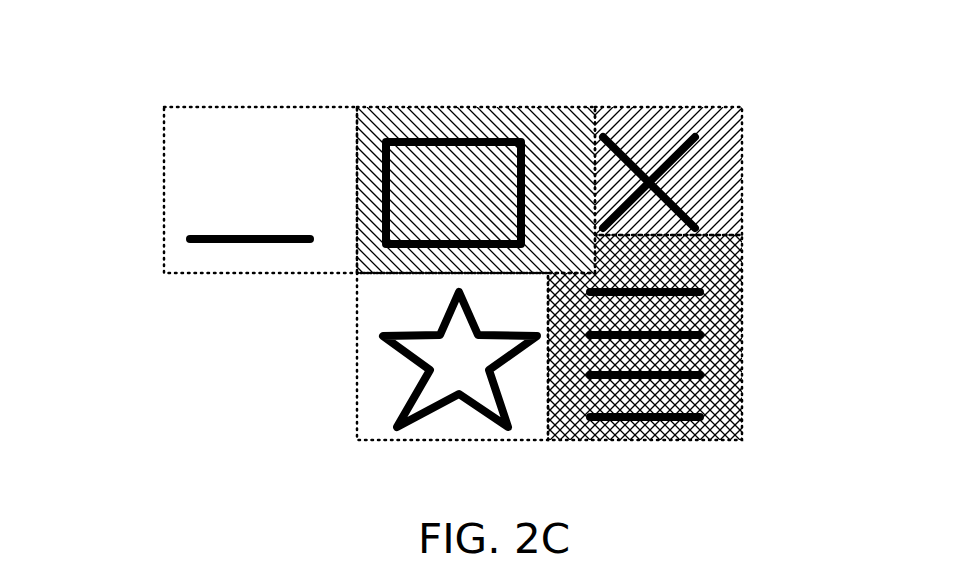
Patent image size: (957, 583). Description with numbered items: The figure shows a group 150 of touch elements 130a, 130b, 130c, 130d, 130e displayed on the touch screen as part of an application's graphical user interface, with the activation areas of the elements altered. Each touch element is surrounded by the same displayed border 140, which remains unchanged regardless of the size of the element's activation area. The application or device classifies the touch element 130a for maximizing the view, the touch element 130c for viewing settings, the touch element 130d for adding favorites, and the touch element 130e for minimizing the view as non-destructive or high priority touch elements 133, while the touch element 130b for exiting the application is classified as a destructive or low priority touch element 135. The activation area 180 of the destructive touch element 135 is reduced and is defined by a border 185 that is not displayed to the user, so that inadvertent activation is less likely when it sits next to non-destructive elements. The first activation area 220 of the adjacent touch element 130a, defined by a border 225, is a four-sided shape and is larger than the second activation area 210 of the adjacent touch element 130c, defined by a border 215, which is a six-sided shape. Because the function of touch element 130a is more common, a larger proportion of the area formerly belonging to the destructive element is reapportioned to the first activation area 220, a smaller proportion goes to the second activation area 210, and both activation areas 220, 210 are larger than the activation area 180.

The group of touch elements 150 is at (127, 38).
The touch element 130a is at (405, 106).
The touch element 130b is at (742, 128).
The touch element 130c is at (742, 308).
The touch element 130d is at (357, 403).
The touch element 130e is at (164, 205).
The non-destructive touch elements 133 is at (495, 242).
The destructive touch element 135 is at (742, 162).
The border 140 is at (550, 143).
The first activation area 220 is at (513, 118).
The border 225 is at (523, 108).
The activation area 180 is at (708, 188).
The border 185 is at (742, 222).
The second activation area 210 is at (722, 365).
The border 215 is at (742, 397).